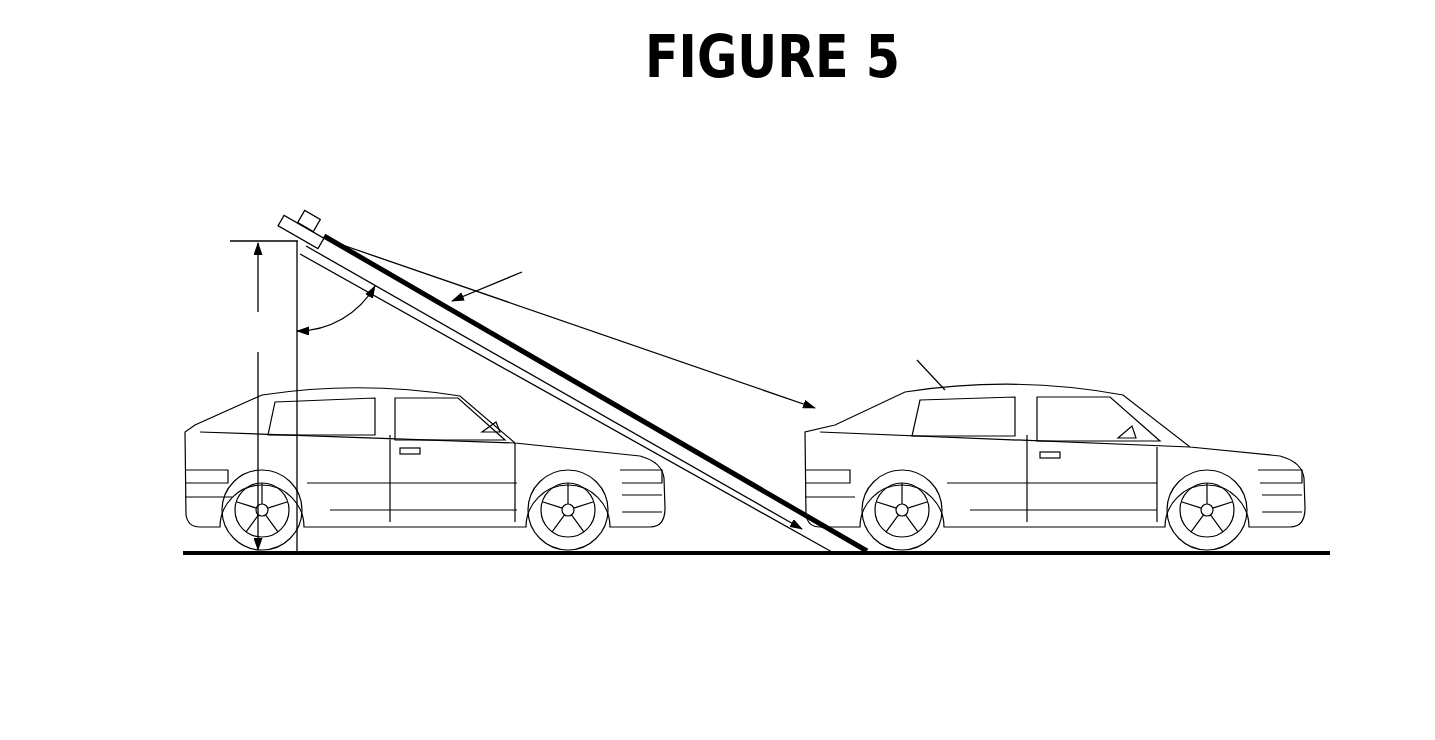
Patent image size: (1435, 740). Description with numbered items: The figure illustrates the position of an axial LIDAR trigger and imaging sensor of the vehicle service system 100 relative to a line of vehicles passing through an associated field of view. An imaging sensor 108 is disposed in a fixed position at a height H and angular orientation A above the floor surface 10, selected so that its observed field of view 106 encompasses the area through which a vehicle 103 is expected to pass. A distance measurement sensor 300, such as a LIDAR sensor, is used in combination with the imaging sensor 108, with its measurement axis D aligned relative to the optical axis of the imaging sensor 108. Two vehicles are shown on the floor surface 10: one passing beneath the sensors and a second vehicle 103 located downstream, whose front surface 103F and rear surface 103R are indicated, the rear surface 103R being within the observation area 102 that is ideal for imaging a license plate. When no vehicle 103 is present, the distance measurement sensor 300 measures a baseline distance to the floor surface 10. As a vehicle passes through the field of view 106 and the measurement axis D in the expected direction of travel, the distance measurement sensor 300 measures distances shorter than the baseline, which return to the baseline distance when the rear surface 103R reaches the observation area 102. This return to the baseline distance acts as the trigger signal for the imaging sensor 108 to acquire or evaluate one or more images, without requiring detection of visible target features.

The floor surface 10 is at (653, 555).
The vehicle service system 100 is at (301, 339).
The imaging sensor 108 is at (293, 212).
The distance measurement sensor 300 is at (333, 212).
The observed field of view 106 is at (588, 378).
The observation area 102 is at (845, 333).
The vehicle 103 is at (1045, 429).
The front surface 103F is at (1291, 450).
The rear surface 103R is at (799, 428).